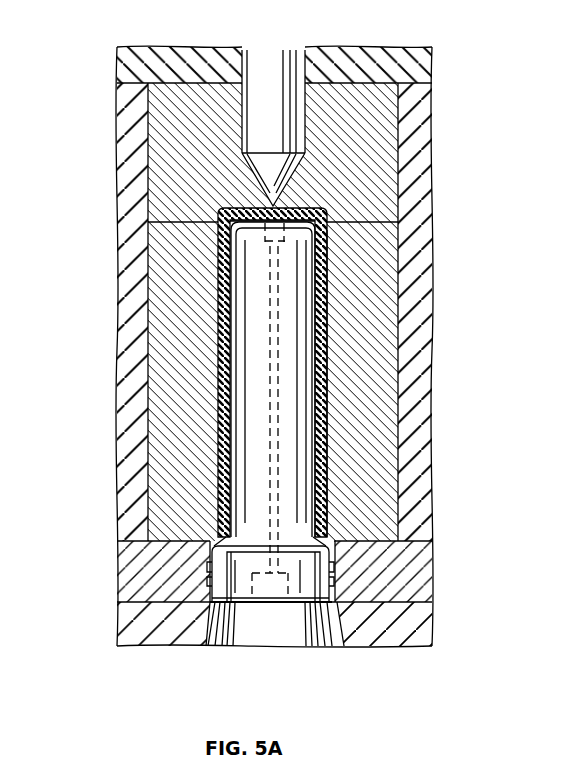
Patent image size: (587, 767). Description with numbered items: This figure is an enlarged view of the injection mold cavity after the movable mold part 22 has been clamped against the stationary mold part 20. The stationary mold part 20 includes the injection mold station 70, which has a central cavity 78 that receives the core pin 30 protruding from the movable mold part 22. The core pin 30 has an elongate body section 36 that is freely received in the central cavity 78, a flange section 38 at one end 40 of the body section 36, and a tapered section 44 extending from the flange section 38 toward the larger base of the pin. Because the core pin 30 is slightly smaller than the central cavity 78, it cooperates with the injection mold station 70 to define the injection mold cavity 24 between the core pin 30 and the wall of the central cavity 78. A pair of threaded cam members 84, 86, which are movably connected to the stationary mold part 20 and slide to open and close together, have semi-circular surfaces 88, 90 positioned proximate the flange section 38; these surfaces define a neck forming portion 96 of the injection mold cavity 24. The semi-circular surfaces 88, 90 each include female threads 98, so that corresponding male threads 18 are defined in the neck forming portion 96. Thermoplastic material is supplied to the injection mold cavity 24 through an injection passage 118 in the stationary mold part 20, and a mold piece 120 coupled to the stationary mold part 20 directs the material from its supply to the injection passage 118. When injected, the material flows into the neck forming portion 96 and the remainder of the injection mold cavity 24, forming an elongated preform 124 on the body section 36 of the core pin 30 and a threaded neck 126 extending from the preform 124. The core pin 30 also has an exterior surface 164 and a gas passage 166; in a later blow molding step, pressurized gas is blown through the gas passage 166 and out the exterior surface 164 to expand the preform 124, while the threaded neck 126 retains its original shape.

The injection passage 118 is at (272, 58).
The mold piece 120 is at (433, 62).
The stationary mold part 20 is at (495, 97).
The injection mold station 70 is at (334, 190).
The central cavity 78 is at (314, 221).
The elongate body section 36 is at (297, 307).
The exterior surface 164 is at (322, 343).
The injection mold cavity 24 is at (334, 425).
The elongated preform 124 is at (334, 458).
The one end 40 is at (338, 547).
The flange section 38 is at (317, 563).
The threaded cam member 84 is at (436, 578).
The threaded cam member 86 is at (110, 577).
The neck forming portion 96 is at (331, 584).
The tapered section 44 is at (313, 620).
The movable mold part 22 is at (168, 649).
The core pin 30 is at (328, 651).
The semi-circular surface 88 is at (329, 592).
The female threads 98 is at (214, 573).
The semi-circular surface 90 is at (219, 600).
The male threads 18 is at (213, 577).
The threaded neck 126 is at (208, 557).
The gas passage 166 is at (268, 295).